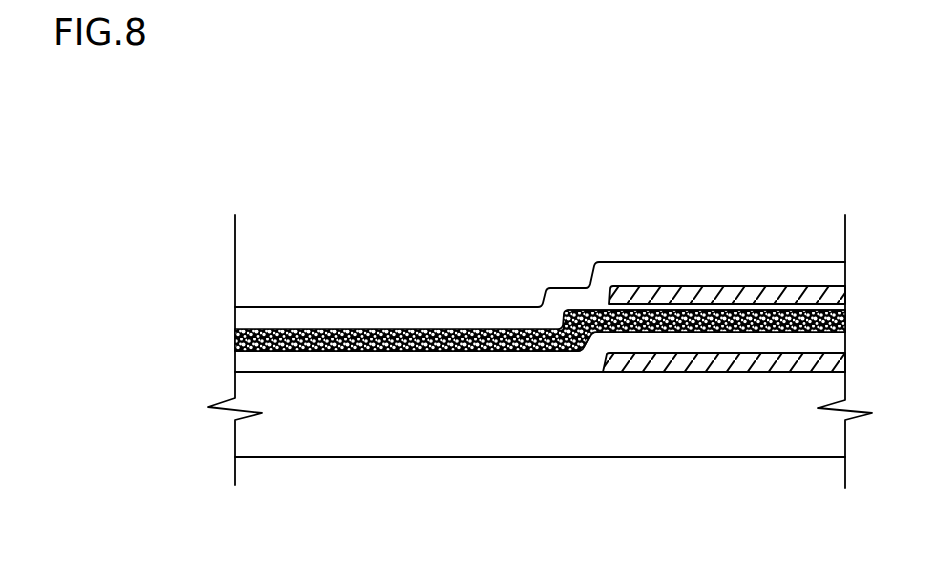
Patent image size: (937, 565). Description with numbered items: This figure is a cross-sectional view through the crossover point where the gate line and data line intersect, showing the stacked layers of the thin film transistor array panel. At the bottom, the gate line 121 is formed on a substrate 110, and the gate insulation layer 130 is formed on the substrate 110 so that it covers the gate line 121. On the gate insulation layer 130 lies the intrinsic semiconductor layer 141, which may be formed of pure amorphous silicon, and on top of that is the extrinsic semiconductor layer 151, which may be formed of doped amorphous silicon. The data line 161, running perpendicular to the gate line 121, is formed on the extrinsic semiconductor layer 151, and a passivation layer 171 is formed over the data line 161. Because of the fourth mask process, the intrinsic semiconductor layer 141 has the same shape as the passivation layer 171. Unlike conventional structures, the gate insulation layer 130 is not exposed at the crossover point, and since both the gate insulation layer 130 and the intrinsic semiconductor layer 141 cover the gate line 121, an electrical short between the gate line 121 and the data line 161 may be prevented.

The substrate 110 is at (492, 418).
The gate line 121 is at (704, 366).
The gate insulation layer 130 is at (803, 344).
The intrinsic semiconductor layer 141 is at (748, 330).
The extrinsic semiconductor layer 151 is at (677, 308).
The data line 161 is at (628, 284).
The passivation layer 171 is at (586, 287).